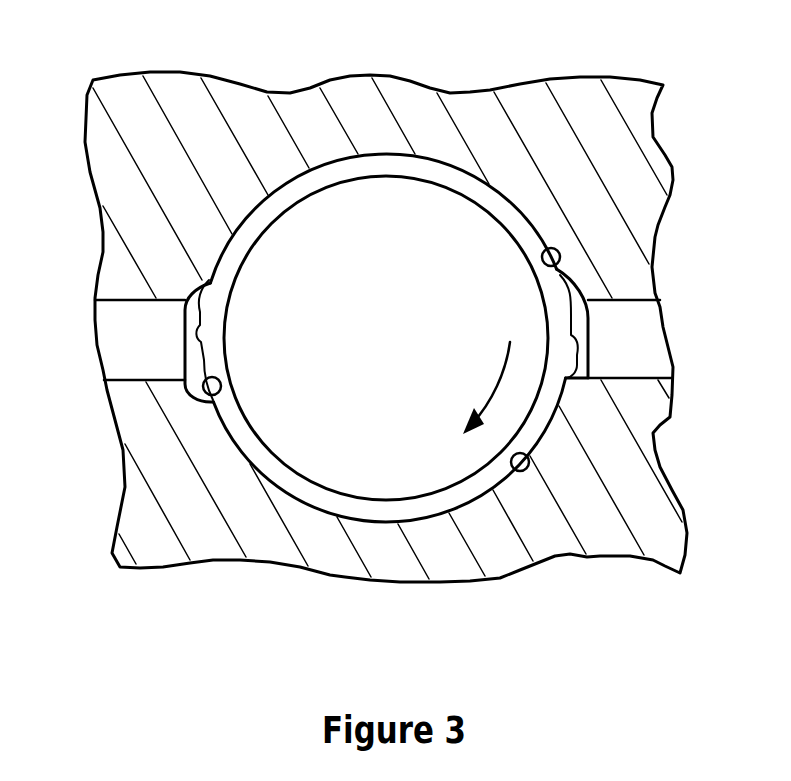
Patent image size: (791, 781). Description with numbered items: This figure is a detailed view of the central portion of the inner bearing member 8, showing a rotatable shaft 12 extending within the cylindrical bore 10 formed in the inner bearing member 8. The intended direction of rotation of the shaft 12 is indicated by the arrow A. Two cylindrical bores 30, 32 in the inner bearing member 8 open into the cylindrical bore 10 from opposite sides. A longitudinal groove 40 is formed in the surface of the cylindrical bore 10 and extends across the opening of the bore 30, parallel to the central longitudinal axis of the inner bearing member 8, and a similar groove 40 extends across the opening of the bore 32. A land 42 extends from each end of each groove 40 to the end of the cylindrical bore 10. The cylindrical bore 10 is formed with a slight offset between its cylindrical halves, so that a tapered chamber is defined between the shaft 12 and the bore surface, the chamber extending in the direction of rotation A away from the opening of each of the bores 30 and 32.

The inner bearing member 8 is at (471, 133).
The cylindrical bore 10 is at (522, 456).
The rotatable shaft 12 is at (388, 470).
The cylindrical bore 30 is at (158, 380).
The cylindrical bore 32 is at (660, 308).
The longitudinal groove 40 is at (588, 360).
The land 42 is at (215, 398).
The arrow A is at (505, 397).